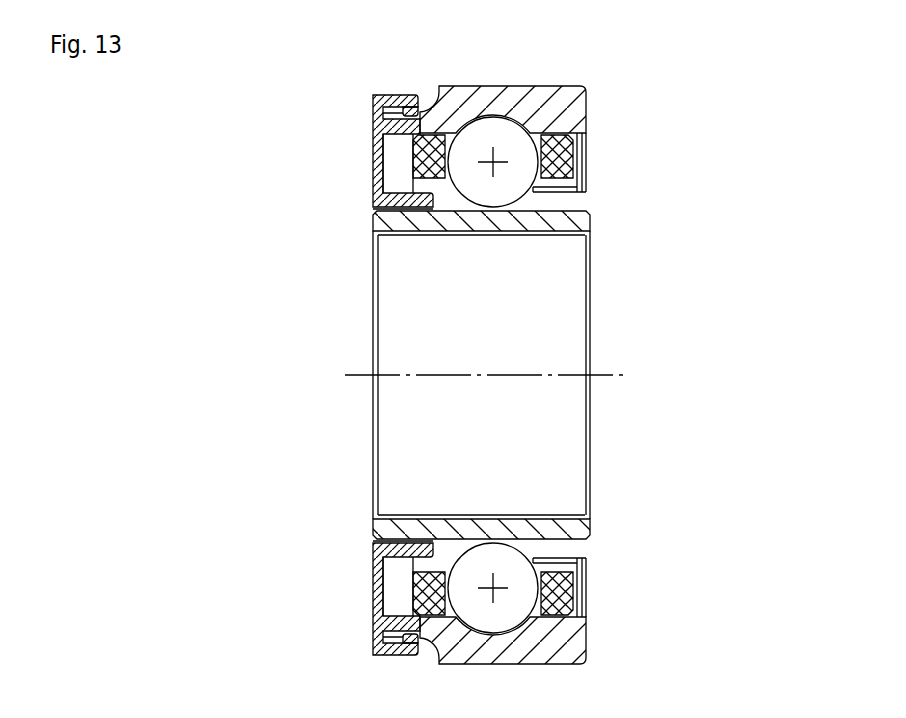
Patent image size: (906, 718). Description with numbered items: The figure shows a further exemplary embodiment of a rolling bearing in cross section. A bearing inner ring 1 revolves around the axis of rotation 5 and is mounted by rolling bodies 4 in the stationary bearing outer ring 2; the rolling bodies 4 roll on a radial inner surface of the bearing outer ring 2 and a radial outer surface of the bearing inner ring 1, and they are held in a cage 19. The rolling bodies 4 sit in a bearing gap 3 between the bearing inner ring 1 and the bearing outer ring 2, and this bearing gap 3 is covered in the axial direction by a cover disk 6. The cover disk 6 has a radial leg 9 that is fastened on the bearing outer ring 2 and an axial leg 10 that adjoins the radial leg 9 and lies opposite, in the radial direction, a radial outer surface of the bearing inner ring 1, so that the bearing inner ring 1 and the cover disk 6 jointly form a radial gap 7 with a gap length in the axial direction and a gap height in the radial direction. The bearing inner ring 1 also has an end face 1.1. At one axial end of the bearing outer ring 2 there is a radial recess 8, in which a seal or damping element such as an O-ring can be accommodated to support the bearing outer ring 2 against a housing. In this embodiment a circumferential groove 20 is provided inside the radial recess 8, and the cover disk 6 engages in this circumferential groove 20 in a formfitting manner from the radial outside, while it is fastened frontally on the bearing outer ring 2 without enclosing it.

The bearing inner ring 1 is at (588, 211).
The end face 1.1 is at (372, 530).
The bearing outer ring 2 is at (557, 123).
The bearing gap 3 is at (577, 108).
The rolling bodies 4 is at (490, 195).
The axis of rotation 5 is at (622, 376).
The cover disk 6 is at (376, 157).
The radial gap 7 is at (377, 210).
The radial recess 8 is at (395, 153).
The radial leg 9 is at (375, 122).
The axial leg 10 is at (394, 196).
The cage 19 is at (553, 587).
The circumferential groove 20 is at (398, 118).